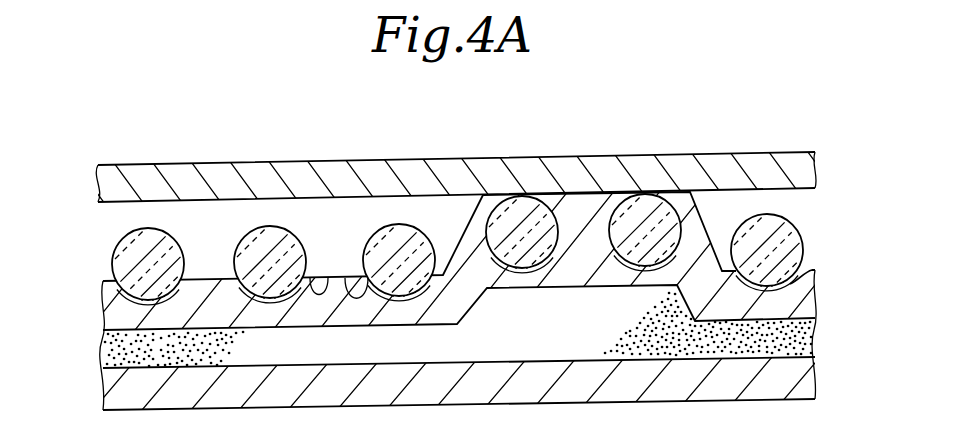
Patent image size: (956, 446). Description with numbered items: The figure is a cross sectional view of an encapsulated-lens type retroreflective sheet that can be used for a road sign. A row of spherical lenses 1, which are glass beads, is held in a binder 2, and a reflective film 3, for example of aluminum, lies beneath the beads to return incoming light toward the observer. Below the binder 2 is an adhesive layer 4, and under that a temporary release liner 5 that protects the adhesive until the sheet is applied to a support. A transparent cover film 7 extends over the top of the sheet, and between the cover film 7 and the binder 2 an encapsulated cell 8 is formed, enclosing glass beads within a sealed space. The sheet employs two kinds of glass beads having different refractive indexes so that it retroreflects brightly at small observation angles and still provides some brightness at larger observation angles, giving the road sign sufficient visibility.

The spherical lens 1 is at (234, 266).
The binder 2 is at (103, 298).
The reflective film 3 is at (346, 278).
The adhesive layer 4 is at (103, 350).
The temporary release liner 5 is at (103, 399).
The transparent cover film 7 is at (341, 173).
The encapsulated cell 8 is at (424, 212).